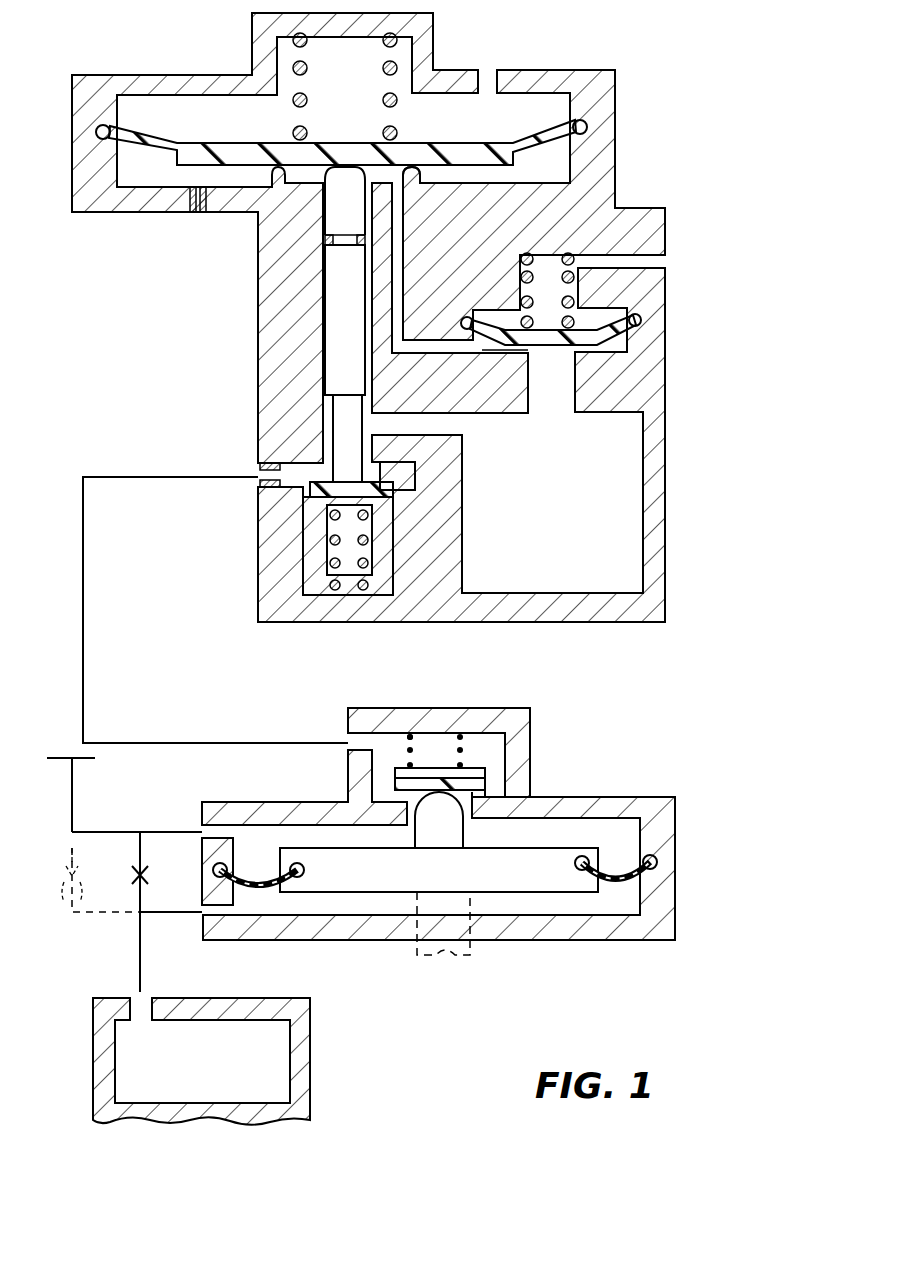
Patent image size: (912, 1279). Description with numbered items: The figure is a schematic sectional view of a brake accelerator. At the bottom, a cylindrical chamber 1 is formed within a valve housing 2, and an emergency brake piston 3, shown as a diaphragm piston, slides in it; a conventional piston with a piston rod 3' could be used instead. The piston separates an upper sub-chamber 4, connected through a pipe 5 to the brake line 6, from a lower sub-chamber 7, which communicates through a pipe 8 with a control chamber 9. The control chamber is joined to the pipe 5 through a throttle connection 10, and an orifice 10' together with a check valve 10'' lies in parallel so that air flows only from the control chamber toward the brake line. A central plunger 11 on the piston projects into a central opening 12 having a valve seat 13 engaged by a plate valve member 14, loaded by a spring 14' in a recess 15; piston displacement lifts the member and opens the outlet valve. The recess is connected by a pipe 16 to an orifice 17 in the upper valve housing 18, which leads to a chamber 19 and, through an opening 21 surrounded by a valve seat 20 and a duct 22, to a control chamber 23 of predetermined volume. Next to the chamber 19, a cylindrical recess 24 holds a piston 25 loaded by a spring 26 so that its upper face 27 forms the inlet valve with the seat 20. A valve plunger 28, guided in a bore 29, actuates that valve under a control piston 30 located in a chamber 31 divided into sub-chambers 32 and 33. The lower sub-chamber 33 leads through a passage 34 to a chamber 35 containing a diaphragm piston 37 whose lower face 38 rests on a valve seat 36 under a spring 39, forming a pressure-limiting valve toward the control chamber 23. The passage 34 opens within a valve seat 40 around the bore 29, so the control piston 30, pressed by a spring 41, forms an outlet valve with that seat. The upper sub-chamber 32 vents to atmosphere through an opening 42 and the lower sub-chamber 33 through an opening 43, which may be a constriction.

The cylindrical chamber 1 is at (592, 900).
The valve housing 2 is at (627, 803).
The emergency brake piston 3 is at (439, 913).
The piston rod 3' is at (465, 942).
The upper sub-chamber 4 is at (298, 835).
The pipe 5 is at (98, 830).
The brake line 6 is at (84, 761).
The lower sub-chamber 7 is at (342, 920).
The pipe 8 is at (163, 914).
The control chamber 9 is at (277, 1057).
The throttle connection 10 is at (194, 912).
The orifice 10' is at (101, 898).
The check valve 10'' is at (99, 855).
The central plunger 11 is at (450, 832).
The central opening 12 is at (410, 823).
The valve seat 13 is at (400, 793).
The plate valve member 14 is at (428, 717).
The spring 14' is at (407, 706).
The recess 15 is at (492, 752).
The pipe 16 is at (148, 743).
The orifice 17 is at (260, 483).
The valve housing 18 is at (393, 317).
The chamber 19 is at (293, 489).
The valve seat 20 is at (386, 466).
The opening 21 is at (372, 450).
The duct 22 is at (410, 420).
The control chamber 23 is at (633, 507).
The cylindrical recess 24 is at (258, 620).
The piston 25 is at (385, 562).
The spring 26 is at (333, 585).
The upper face 27 is at (310, 482).
The valve plunger 28 is at (345, 324).
The bore 29 is at (325, 294).
The control piston 30 is at (488, 140).
The chamber 31 is at (560, 110).
The upper sub-chamber 32 is at (448, 110).
The lower sub-chamber 33 is at (563, 173).
The passage 34 is at (435, 347).
The chamber 35 is at (502, 352).
The valve seat 36 is at (578, 354).
The diaphragm piston 37 is at (588, 350).
The lower face 38 is at (552, 352).
The spring 39 is at (568, 307).
The valve seat 40 is at (422, 178).
The spring 41 is at (308, 98).
The opening 42 is at (496, 78).
The opening 43 is at (196, 210).